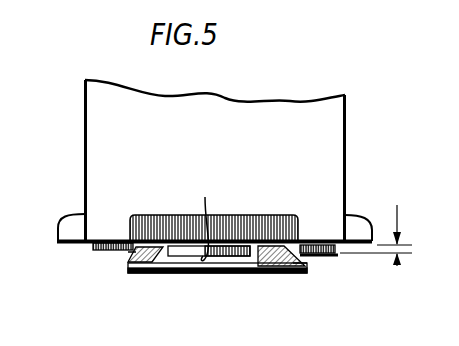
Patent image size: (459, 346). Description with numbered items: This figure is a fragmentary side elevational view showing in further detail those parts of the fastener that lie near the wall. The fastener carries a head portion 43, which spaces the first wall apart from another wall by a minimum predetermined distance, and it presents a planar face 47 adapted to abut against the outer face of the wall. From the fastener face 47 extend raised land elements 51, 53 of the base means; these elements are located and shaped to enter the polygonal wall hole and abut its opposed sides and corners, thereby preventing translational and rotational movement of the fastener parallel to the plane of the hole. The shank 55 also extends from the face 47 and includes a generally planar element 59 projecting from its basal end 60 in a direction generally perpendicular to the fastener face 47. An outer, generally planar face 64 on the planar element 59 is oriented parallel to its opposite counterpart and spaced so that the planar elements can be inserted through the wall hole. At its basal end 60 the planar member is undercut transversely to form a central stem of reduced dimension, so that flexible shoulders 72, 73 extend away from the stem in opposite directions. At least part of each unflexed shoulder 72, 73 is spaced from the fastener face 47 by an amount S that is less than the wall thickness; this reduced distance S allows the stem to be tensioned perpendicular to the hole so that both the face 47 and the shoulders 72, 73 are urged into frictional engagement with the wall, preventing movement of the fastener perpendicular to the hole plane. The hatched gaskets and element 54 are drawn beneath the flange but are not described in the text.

The head portion 43 is at (204, 132).
The planar face 47 is at (135, 249).
The raised land element 51 is at (230, 256).
The raised land element 53 is at (93, 250).
The gasket 54 is at (327, 258).
The shank 55 is at (215, 278).
The planar element 59 is at (158, 273).
The basal end 60 is at (203, 217).
The planar face 64 is at (264, 268).
The flexible shoulder 72 is at (137, 257).
The flexible shoulder 73 is at (293, 264).
The amount S is at (379, 229).